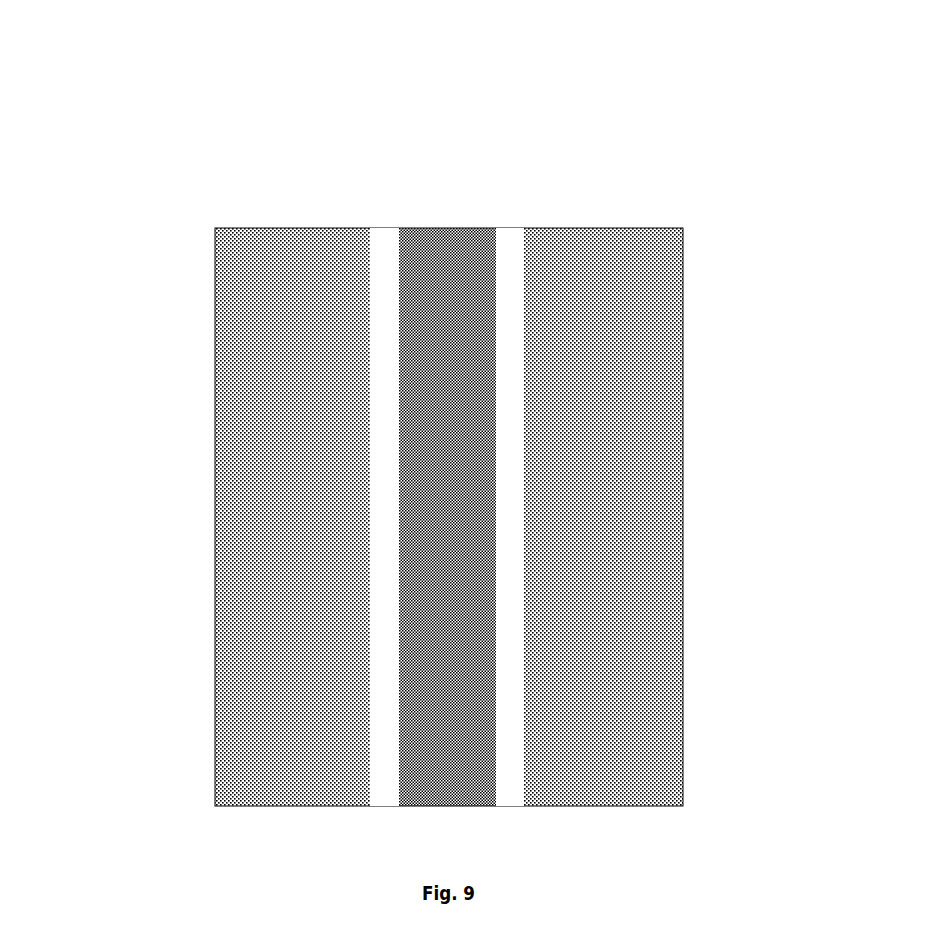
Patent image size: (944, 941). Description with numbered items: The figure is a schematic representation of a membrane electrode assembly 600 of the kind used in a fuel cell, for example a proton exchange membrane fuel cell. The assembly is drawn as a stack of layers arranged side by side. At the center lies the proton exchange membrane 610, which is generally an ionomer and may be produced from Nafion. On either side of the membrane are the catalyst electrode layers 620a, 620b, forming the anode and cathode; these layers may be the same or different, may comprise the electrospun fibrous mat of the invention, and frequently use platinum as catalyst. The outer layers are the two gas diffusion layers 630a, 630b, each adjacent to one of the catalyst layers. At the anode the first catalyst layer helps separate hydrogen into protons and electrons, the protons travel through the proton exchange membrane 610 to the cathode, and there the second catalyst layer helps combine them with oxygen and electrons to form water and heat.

The membrane electrode assembly 600 is at (449, 403).
The proton exchange membrane 610 is at (443, 290).
The catalyst electrode layer 620a is at (384, 260).
The catalyst electrode layer 620b is at (511, 260).
The gas diffusion layer 630a is at (230, 409).
The gas diffusion layer 630b is at (667, 409).